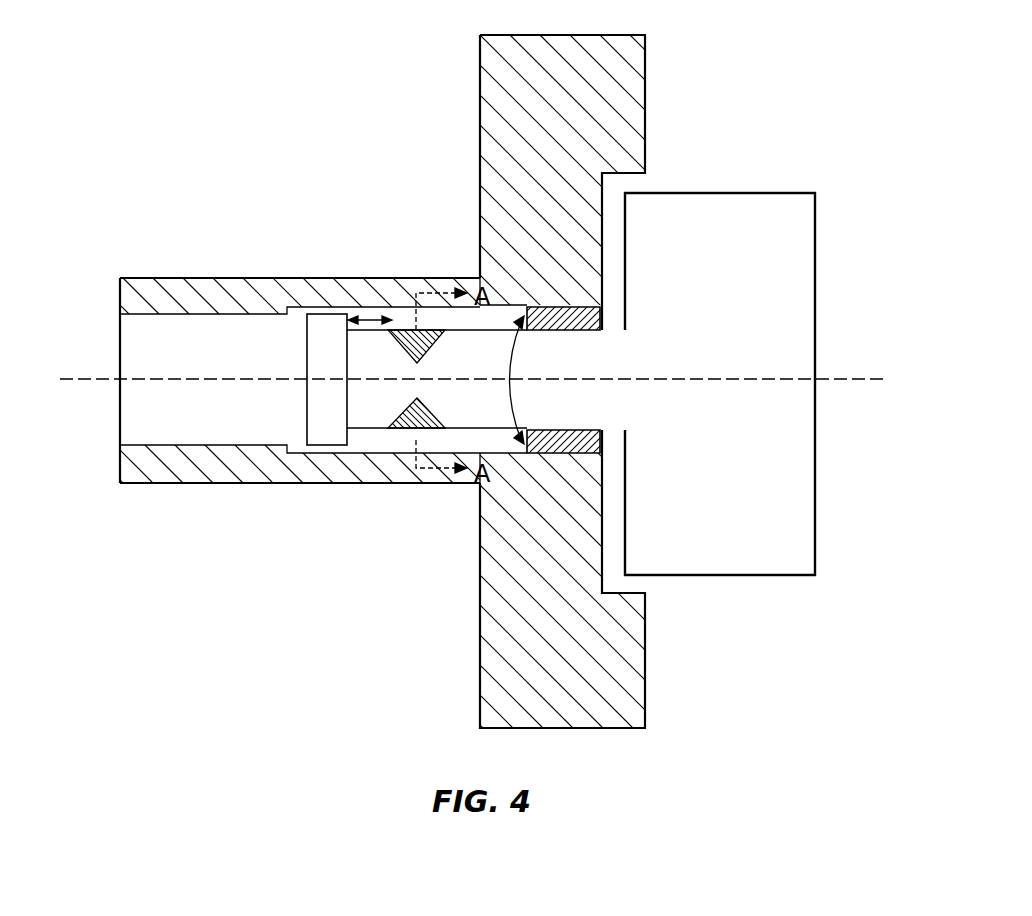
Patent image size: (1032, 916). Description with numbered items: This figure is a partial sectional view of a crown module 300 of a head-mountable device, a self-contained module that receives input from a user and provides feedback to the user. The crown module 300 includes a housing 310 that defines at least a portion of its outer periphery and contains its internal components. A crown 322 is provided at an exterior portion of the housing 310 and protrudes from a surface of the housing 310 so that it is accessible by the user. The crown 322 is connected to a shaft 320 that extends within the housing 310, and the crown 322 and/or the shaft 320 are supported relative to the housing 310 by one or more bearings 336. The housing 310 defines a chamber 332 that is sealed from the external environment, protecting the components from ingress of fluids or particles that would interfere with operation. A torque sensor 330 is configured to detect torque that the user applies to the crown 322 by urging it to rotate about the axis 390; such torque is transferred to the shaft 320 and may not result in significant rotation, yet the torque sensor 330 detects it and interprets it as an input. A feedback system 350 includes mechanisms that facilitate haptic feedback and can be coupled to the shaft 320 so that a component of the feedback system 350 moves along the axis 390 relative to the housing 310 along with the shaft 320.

The crown module 300 is at (135, 22).
The housing 310 is at (645, 113).
The shaft 320 is at (467, 432).
The crown 322 is at (815, 297).
The torque sensor 330 is at (403, 433).
The chamber 332 is at (363, 443).
The bearings 336 is at (570, 306).
The feedback system 350 is at (133, 352).
The axis 390 is at (863, 383).